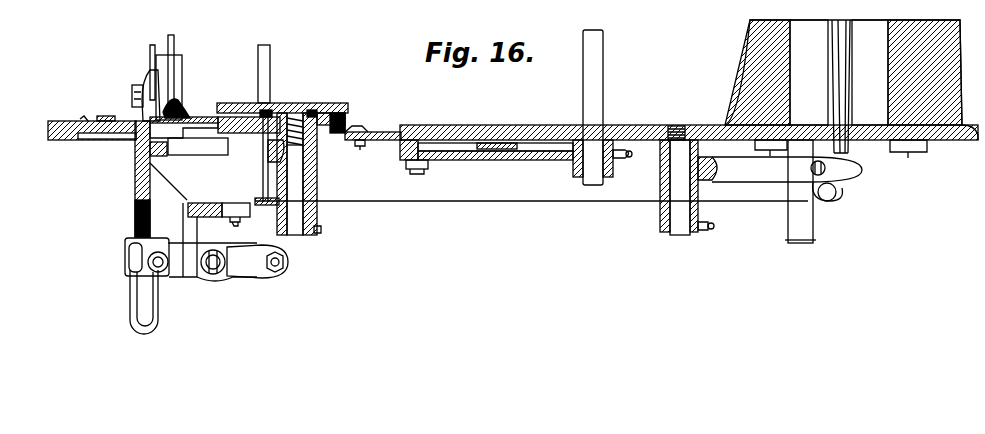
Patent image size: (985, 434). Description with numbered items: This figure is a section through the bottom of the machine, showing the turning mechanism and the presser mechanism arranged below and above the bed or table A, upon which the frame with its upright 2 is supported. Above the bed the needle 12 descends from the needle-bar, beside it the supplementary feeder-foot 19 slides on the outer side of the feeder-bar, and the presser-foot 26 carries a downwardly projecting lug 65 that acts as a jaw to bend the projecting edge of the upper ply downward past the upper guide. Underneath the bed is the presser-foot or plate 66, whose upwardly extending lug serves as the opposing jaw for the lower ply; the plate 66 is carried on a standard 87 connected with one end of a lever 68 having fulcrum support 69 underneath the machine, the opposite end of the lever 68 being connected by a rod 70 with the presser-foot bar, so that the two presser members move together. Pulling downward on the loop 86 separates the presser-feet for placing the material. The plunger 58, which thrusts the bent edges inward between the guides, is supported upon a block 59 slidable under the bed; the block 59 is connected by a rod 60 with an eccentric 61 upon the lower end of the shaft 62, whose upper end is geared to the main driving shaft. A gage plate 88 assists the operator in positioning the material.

The upright 2 is at (750, 43).
The needle 12 is at (175, 39).
The supplementary feeder-foot 19 is at (143, 88).
The presser-foot 26 is at (184, 110).
The plunger 58 is at (291, 103).
The block 59 is at (341, 134).
The rod 60 is at (493, 151).
The eccentric 61 is at (553, 160).
The shaft 62 is at (596, 92).
The lug 65 is at (190, 117).
The presser-foot or plate 66 is at (180, 113).
The lever 68 is at (190, 278).
The fulcrum support 69 is at (229, 265).
The rod 70 is at (267, 60).
The loop 86 is at (130, 299).
The standard 87 is at (135, 212).
The gage plate 88 is at (120, 112).
The bed or table A is at (492, 124).